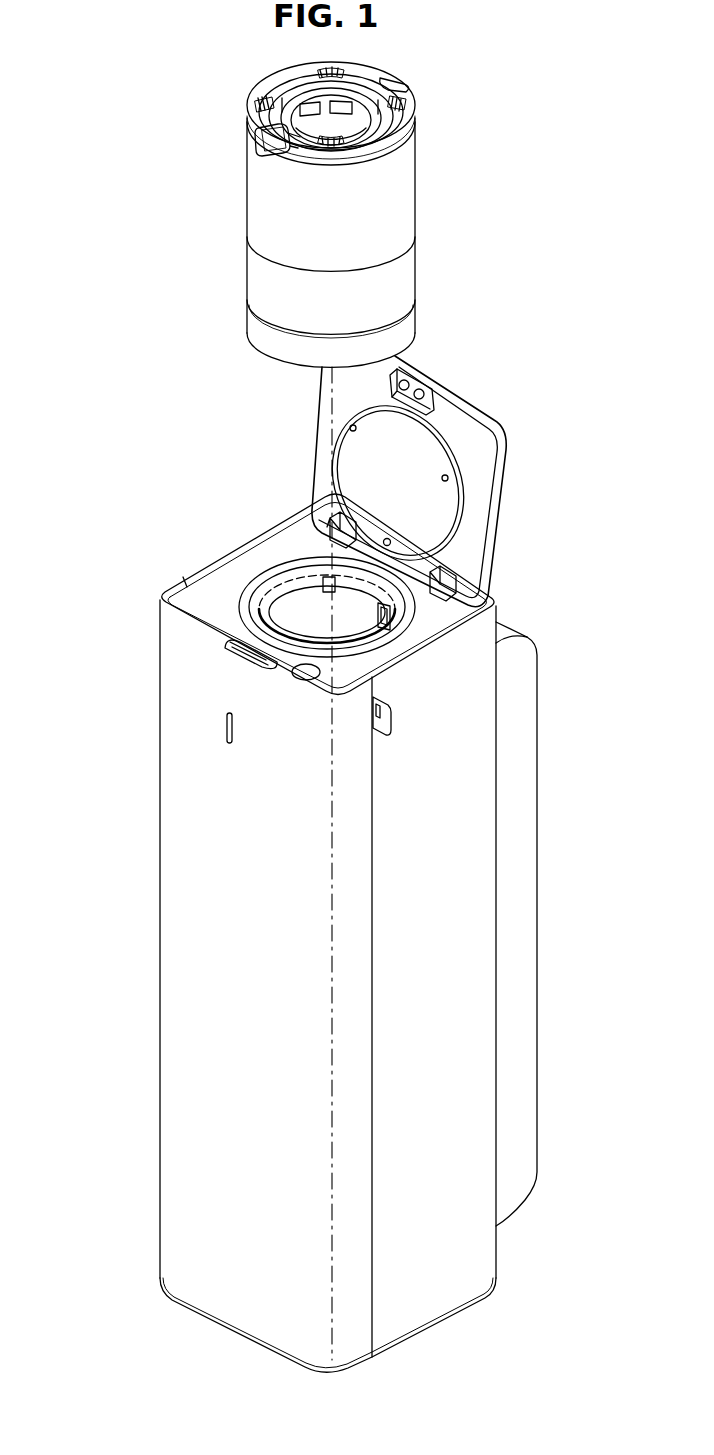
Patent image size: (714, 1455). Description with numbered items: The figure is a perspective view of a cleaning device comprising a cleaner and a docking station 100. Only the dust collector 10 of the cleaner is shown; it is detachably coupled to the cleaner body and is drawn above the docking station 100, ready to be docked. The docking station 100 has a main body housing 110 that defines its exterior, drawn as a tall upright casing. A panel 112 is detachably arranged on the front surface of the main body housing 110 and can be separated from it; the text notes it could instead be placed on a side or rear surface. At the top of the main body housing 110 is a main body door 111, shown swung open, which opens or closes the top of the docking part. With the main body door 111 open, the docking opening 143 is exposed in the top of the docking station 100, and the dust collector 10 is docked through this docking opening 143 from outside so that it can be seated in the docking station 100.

The docking station 100 is at (93, 460).
The dust collector 10 is at (403, 219).
The main body housing 110 is at (467, 837).
The main body door 111 is at (503, 503).
The panel 112 is at (190, 977).
The docking opening 143 is at (307, 635).